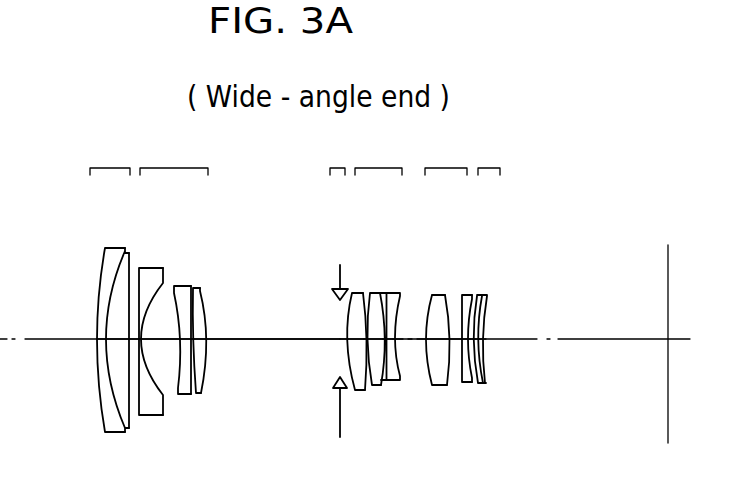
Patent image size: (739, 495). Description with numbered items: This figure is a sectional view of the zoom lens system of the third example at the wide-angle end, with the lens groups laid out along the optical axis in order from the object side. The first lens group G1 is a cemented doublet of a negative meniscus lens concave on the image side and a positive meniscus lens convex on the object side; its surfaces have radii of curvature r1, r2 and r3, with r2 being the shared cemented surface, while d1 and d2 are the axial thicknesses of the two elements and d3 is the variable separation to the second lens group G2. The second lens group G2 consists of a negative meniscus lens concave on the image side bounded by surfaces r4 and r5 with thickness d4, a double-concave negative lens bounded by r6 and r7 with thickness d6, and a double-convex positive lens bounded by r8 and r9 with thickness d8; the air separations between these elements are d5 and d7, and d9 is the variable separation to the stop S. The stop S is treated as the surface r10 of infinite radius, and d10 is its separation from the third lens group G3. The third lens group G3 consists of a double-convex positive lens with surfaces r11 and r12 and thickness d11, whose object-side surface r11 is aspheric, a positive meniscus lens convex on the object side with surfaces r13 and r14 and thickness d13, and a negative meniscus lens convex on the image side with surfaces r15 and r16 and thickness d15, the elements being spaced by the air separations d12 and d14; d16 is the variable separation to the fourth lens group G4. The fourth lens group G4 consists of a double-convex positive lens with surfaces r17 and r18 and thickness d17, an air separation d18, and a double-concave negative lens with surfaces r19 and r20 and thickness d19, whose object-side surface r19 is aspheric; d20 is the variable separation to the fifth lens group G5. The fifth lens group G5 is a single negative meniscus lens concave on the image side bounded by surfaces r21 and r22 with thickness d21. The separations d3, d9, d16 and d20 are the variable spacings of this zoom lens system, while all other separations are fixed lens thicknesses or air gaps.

The first lens group G1 is at (110, 152).
The second lens group G2 is at (174, 152).
The stop S is at (338, 283).
The third lens group G3 is at (378, 152).
The fourth lens group G4 is at (446, 152).
The fifth lens group G5 is at (489, 152).
The object-side surface of negative meniscus lens of first lens group r1 is at (102, 277).
The cemented surface of first lens group doublet r2 is at (111, 272).
The image-side surface of first lens group r3 is at (129, 266).
The object-side surface of negative meniscus lens of second lens group r4 is at (140, 268).
The image-side surface of negative meniscus lens of second lens group r5 is at (161, 268).
The object-side surface of double-concave lens of second lens group r6 is at (174, 287).
The image-side surface of double-concave lens of second lens group r7 is at (191, 286).
The object-side surface of double-convex lens of second lens group r8 is at (198, 288).
The image-side surface of double-convex lens of second lens group r9 is at (207, 303).
The stop surface r10 is at (339, 312).
The aspheric object-side surface of double-convex lens of third lens group r11 is at (349, 303).
The image-side surface of double-convex lens of third lens group r12 is at (366, 300).
The object-side surface of positive meniscus lens of third lens group r13 is at (371, 293).
The image-side surface of positive meniscus lens of third lens group r14 is at (386, 293).
The object-side surface of negative meniscus lens of third lens group r15 is at (401, 300).
The image-side surface of negative meniscus lens of third lens group r16 is at (432, 295).
The object-side surface of double-convex lens of fourth lens group r17 is at (446, 295).
The image-side surface of double-convex lens of fourth lens group r18 is at (462, 295).
The aspheric object-side surface of double-concave lens of fourth lens group r19 is at (471, 297).
The image-side surface of double-concave lens of fourth lens group r20 is at (480, 296).
The object-side surface of negative meniscus lens of fifth lens group r21 is at (484, 297).
The image-side surface of negative meniscus lens of fifth lens group r22 is at (488, 306).
The thickness of negative meniscus lens of first lens group d1 is at (98, 341).
The thickness of positive meniscus lens of first lens group d2 is at (121, 341).
The variable separation between first and second lens groups d3 is at (126, 430).
The thickness of negative meniscus lens of second lens group d4 is at (148, 417).
The air separation within second lens group d5 is at (160, 356).
The thickness of double-concave lens of second lens group d6 is at (183, 396).
The air separation within second lens group d7 is at (200, 396).
The thickness of double-convex lens of second lens group d8 is at (204, 388).
The variable separation between second lens group and stop d9 is at (273, 356).
The separation between stop and third lens group d10 is at (345, 362).
The thickness of double-convex lens of third lens group d11 is at (360, 393).
The air separation within third lens group d12 is at (369, 392).
The thickness of positive meniscus lens of third lens group d13 is at (378, 388).
The air separation within third lens group d14 is at (389, 386).
The thickness of negative meniscus lens of third lens group d15 is at (402, 384).
The variable separation between third and fourth lens groups d16 is at (440, 388).
The thickness of double-convex lens of fourth lens group d17 is at (450, 390).
The air separation within fourth lens group d18 is at (460, 388).
The thickness of double-concave lens of fourth lens group d19 is at (468, 386).
The variable separation between fourth and fifth lens groups d20 is at (474, 366).
The thickness of negative meniscus lens of fifth lens group d21 is at (478, 352).